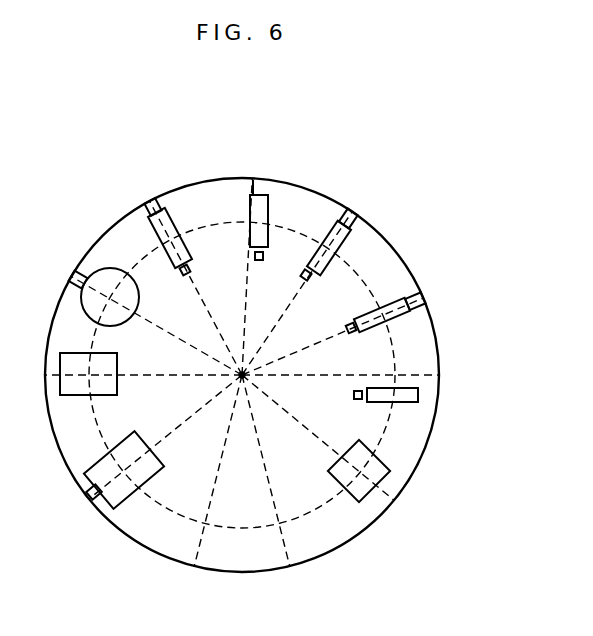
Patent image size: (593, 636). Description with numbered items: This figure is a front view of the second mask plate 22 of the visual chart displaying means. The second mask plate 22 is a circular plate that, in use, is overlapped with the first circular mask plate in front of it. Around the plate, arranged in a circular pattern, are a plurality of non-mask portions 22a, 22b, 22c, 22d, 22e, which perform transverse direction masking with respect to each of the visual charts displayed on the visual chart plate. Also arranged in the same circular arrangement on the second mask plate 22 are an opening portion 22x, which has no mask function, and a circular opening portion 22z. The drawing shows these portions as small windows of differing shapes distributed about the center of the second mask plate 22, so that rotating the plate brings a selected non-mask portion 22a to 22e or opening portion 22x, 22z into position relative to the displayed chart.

The second mask plate 22 is at (402, 259).
The non-mask portion 22a is at (418, 397).
The non-mask portion 22b is at (404, 316).
The non-mask portion 22c is at (344, 226).
The non-mask portion 22d is at (268, 196).
The non-mask portion 22e is at (148, 200).
The opening portion 22x is at (130, 497).
The circular opening portion 22z is at (96, 270).